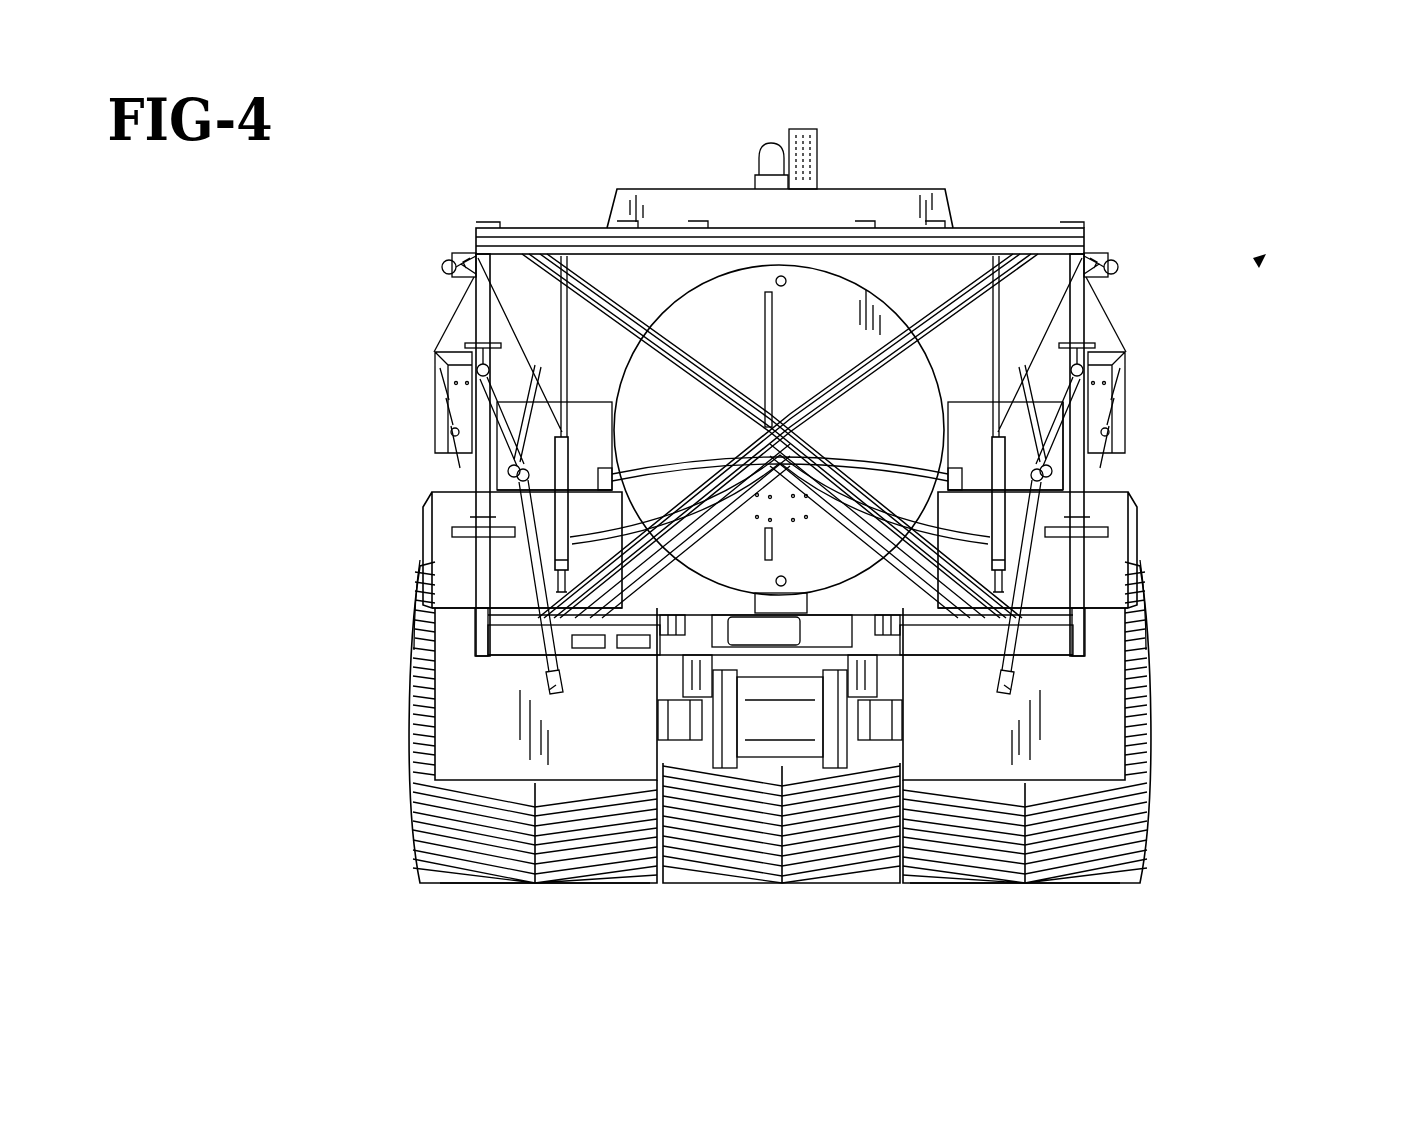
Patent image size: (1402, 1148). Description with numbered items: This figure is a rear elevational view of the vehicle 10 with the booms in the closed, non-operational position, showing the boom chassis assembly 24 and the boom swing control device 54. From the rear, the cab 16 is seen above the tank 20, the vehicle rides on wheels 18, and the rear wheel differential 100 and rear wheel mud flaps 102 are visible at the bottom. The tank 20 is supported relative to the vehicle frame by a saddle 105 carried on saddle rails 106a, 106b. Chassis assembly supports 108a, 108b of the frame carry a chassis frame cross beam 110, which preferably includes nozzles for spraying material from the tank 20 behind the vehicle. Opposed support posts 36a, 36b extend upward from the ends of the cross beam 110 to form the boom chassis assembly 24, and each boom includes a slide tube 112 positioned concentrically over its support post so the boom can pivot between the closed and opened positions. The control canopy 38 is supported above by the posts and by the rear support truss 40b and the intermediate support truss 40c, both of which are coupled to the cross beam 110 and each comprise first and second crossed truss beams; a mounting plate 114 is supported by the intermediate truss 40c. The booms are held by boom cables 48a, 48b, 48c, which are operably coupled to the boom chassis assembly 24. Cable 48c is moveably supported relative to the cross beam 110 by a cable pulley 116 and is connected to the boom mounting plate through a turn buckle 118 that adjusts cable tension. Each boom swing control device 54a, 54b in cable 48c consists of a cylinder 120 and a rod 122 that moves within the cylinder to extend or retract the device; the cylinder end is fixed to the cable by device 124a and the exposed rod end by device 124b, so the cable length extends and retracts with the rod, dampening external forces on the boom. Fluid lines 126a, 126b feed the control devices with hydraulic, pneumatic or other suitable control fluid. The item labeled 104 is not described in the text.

The vehicle 10 is at (1258, 270).
The cab 16 is at (893, 188).
The wheels 18 is at (410, 842).
The tank 20 is at (820, 324).
The boom chassis assembly 24 is at (1093, 191).
The support post 36a is at (500, 572).
The support post 36b is at (1040, 578).
The control canopy 38 is at (968, 226).
The rear support truss 40b is at (612, 318).
The intermediate support truss 40c is at (708, 384).
The boom cable 48a is at (452, 318).
The boom cable 48b is at (490, 420).
The boom cable 48c is at (540, 612).
The boom swing control device 54 is at (1100, 505).
The boom swing control device 54a is at (568, 437).
The boom swing control device 54b is at (992, 437).
The rear wheel differential 100 is at (779, 722).
The rear wheel mud flaps 102 is at (562, 733).
The wheel well 104 is at (420, 540).
The saddle 105 is at (800, 765).
The saddle rail 106a is at (722, 668).
The saddle rail 106b is at (838, 668).
The chassis assembly support 108a is at (690, 742).
The chassis assembly support 108b is at (875, 742).
The chassis frame cross beam 110 is at (1063, 640).
The slide tube 112 is at (467, 505).
The mounting plate 114 is at (780, 506).
The cable pulley 116 is at (548, 685).
The turn buckle 118 is at (445, 418).
The cylinder 120 is at (455, 532).
The rod 122 is at (475, 572).
The device 124a is at (476, 236).
The device 124b is at (500, 650).
The fluid line 126a is at (648, 472).
The fluid line 126b is at (694, 490).